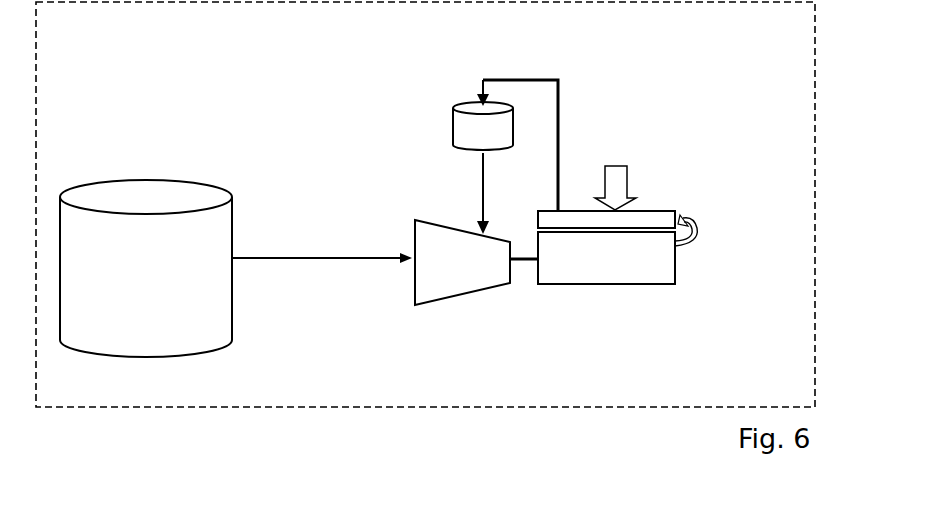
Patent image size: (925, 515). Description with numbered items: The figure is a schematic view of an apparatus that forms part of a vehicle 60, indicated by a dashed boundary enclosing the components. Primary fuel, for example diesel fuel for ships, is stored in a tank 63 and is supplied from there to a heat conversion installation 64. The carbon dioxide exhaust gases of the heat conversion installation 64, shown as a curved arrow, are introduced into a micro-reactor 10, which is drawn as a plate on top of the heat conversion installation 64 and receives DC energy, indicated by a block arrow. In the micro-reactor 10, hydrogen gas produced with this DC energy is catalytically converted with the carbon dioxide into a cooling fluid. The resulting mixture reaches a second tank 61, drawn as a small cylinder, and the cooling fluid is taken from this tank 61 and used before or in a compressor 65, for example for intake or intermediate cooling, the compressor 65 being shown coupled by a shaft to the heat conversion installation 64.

The vehicle 60 is at (130, 407).
The tank 63 is at (217, 343).
The compressor 65 is at (437, 293).
The tank 61 is at (459, 116).
The micro-reactor 10 is at (657, 216).
The heat conversion installation 64 is at (608, 277).